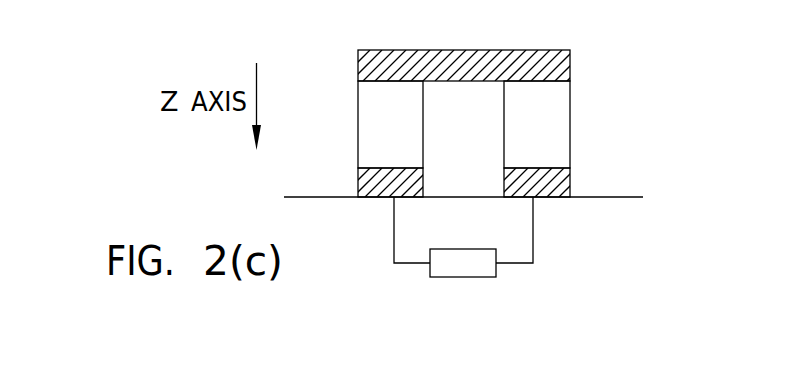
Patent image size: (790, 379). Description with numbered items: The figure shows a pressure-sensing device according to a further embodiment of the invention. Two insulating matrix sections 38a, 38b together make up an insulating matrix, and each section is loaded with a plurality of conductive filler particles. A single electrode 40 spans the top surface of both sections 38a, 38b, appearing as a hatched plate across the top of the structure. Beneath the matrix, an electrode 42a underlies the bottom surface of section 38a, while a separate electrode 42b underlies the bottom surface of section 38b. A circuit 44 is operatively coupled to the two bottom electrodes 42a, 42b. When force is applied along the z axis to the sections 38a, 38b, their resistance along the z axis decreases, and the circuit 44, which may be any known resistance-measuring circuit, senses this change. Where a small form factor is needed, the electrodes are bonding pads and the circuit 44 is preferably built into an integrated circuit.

The electrode 40 is at (571, 62).
The insulating matrix section 38a is at (359, 127).
The insulating matrix section 38b is at (563, 126).
The electrode 42a is at (361, 181).
The electrode 42b is at (569, 181).
The circuit 44 is at (461, 278).